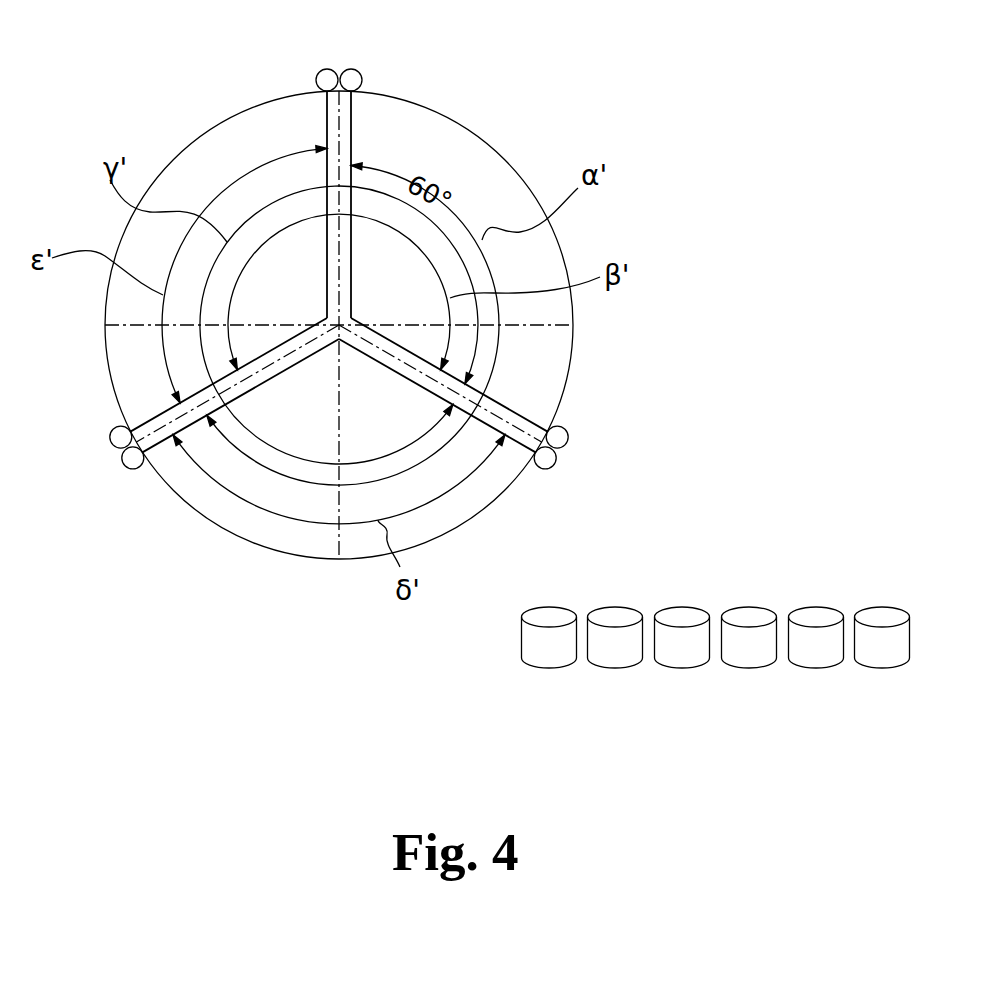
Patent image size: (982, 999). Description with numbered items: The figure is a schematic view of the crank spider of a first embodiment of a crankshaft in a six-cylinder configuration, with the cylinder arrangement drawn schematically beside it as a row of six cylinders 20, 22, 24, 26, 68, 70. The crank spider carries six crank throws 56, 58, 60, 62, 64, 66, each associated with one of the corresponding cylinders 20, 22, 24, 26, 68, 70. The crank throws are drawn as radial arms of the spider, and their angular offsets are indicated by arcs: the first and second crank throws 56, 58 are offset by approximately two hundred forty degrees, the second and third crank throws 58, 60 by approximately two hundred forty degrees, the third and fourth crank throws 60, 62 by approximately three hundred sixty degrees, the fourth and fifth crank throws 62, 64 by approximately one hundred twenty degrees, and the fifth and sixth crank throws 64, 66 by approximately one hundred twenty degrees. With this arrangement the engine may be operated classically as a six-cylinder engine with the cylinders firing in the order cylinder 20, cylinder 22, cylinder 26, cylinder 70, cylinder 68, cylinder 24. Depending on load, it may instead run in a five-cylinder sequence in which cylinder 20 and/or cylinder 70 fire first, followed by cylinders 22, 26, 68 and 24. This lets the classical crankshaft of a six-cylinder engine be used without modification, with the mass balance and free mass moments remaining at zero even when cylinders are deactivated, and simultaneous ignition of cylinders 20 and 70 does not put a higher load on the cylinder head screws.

The cylinder 20 is at (545, 615).
The cylinder 22 is at (611, 615).
The cylinder 24 is at (678, 615).
The cylinder 26 is at (745, 615).
The cylinder 68 is at (812, 615).
The cylinder 70 is at (878, 615).
The first crank throw 56 is at (328, 82).
The second crank throw 58 is at (122, 437).
The third crank throw 60 is at (546, 458).
The fourth crank throw 62 is at (558, 437).
The fifth crank throw 64 is at (133, 458).
The sixth crank throw 66 is at (352, 82).